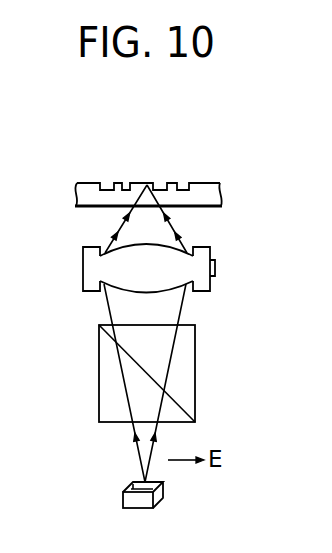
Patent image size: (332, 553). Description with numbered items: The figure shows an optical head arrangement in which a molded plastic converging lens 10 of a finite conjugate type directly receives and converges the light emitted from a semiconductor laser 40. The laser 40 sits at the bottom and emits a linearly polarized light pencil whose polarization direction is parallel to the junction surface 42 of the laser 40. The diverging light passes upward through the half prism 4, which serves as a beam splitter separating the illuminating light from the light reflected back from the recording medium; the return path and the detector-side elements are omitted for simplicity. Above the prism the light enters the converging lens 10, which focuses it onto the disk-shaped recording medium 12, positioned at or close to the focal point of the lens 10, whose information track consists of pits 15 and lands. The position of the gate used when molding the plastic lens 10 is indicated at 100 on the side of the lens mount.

The half prism 4 is at (180, 367).
The converging lens 10 is at (115, 265).
The disk-shaped recording medium 12 is at (214, 193).
The pits 15 is at (148, 183).
The semiconductor laser 40 is at (138, 500).
The junction surface 42 is at (137, 483).
The gate position 100 is at (215, 268).